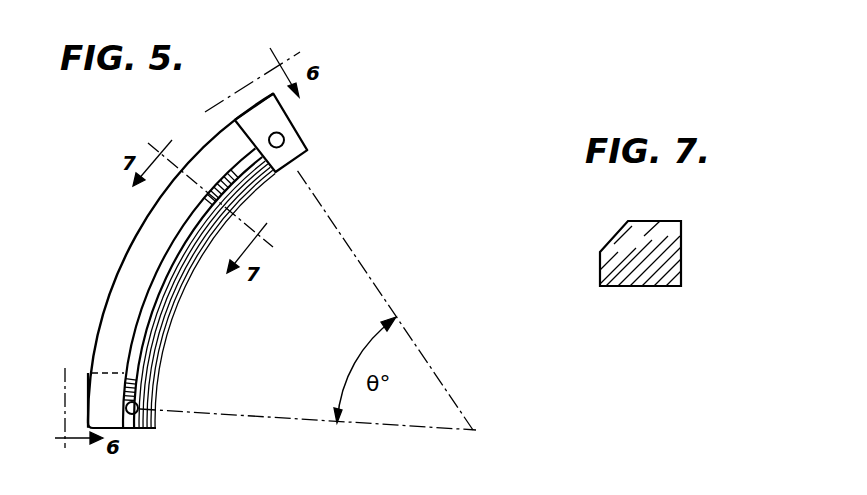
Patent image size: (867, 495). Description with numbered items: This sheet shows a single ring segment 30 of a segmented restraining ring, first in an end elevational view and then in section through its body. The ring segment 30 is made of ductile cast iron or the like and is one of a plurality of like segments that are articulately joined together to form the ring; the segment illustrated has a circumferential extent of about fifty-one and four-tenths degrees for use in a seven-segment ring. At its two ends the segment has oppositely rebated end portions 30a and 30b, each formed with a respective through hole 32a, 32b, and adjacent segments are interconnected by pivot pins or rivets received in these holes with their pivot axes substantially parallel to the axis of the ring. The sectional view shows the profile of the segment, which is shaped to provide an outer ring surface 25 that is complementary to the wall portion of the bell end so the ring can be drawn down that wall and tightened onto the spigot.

In FIG. 5, the ring segment 30 is at (118, 266).
In FIG. 7, the ring segment 30 is at (683, 258).
In FIG. 5, the rebated end portion 30a is at (283, 111).
In FIG. 5, the rebated end portion 30b is at (100, 402).
In FIG. 5, the through hole 32a is at (283, 143).
In FIG. 5, the through hole 32b is at (136, 413).
In FIG. 7, the outer ring surface 25 is at (641, 238).